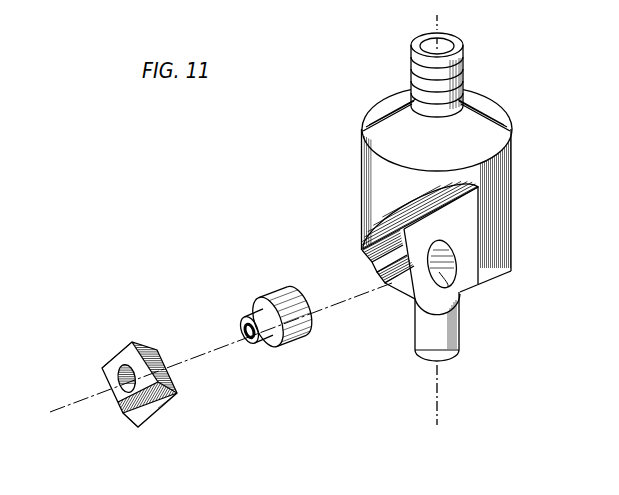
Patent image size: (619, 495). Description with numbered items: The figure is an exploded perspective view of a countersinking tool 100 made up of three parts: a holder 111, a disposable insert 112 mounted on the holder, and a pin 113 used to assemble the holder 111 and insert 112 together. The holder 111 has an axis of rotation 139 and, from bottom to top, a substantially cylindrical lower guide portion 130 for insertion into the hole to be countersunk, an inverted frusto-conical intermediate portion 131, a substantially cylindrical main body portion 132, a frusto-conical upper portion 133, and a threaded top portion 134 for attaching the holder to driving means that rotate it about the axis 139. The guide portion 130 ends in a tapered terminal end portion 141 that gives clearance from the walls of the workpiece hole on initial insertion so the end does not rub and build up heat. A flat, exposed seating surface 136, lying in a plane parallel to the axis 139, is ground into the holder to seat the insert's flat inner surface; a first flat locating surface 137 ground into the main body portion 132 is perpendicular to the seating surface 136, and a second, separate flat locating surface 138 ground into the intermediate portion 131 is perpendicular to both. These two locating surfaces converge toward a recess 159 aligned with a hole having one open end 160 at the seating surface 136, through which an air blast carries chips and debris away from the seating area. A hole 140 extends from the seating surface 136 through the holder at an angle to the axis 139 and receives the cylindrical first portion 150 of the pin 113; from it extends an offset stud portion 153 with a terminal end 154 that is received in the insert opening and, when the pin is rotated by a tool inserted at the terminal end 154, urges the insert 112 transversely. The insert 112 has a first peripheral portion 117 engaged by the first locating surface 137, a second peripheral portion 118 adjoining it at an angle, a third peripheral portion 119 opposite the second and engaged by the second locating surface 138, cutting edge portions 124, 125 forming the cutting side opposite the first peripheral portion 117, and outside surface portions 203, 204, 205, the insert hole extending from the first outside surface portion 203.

The countersinking tool 100 is at (244, 227).
The holder 111 is at (362, 130).
The disposable insert 112 is at (125, 381).
The pin 113 is at (246, 336).
The first peripheral portion 117 is at (112, 358).
The second peripheral portion 118 is at (133, 341).
The third peripheral portion 119 is at (98, 378).
The cutting edge portion 124 is at (167, 410).
The cutting edge portion 125 is at (160, 418).
The lower guide portion 130 is at (410, 358).
The intermediate portion 131 is at (484, 282).
The main body portion 132 is at (507, 172).
The upper portion 133 is at (429, 145).
The threaded top portion 134 is at (465, 62).
The seating surface 136 is at (470, 217).
The first locating surface 137 is at (412, 212).
The second locating surface 138 is at (407, 287).
The axis of rotation 139 is at (440, 378).
The hole 140 is at (422, 324).
The tapered terminal end portion 141 is at (458, 352).
The first portion 150 is at (300, 341).
The stud portion 153 is at (262, 346).
The terminal end 154 is at (243, 333).
The recess 159 is at (376, 276).
The open end 160 is at (374, 265).
The first outside surface portion 203 is at (102, 364).
The outside surface portion 204 is at (179, 386).
The outside surface portion 205 is at (112, 400).